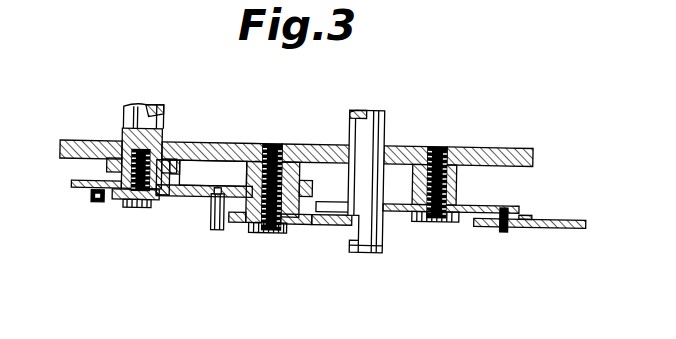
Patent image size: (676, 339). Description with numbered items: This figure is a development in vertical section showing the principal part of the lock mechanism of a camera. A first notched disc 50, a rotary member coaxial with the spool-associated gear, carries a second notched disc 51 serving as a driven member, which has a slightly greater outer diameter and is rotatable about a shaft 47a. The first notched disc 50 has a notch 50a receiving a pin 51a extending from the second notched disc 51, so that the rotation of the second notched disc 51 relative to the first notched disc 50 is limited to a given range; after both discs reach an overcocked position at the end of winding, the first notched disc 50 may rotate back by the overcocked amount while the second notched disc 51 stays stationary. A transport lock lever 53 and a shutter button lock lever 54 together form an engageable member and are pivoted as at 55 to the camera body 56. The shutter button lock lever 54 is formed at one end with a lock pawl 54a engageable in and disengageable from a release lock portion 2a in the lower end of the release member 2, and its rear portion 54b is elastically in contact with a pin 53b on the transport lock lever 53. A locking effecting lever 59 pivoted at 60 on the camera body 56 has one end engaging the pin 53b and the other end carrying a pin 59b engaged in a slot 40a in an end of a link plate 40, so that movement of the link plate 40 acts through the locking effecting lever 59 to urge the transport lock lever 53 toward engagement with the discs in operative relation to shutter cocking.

The release member 2 is at (385, 121).
The release lock portion 2a is at (362, 249).
The link plate 40 is at (562, 220).
The slot 40a is at (532, 207).
The shaft 47a is at (160, 126).
The first notched disc 50 is at (152, 199).
The notch 50a is at (114, 199).
The second notched disc 51 is at (78, 183).
The pin 51a is at (90, 202).
The transport lock lever 53 is at (314, 178).
The pin 53b is at (216, 227).
The shutter button lock lever 54 is at (298, 223).
The lock pawl 54a is at (338, 221).
The rear portion 54b is at (241, 221).
The pivot 55 is at (273, 229).
The camera body 56 is at (229, 140).
The locking effecting lever 59 is at (477, 198).
The pin 59b is at (505, 225).
The pivot 60 is at (435, 216).